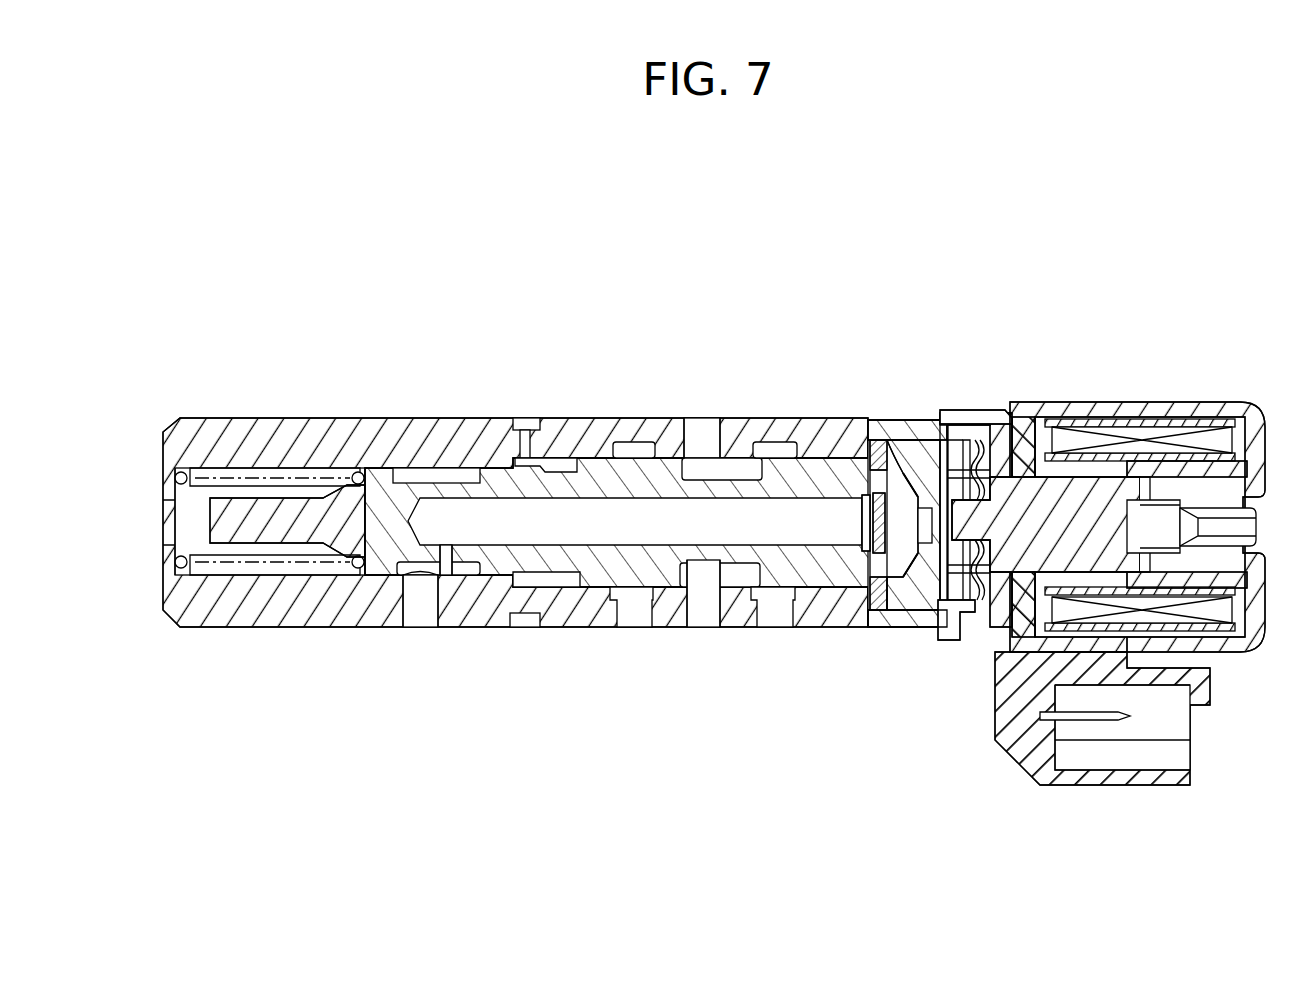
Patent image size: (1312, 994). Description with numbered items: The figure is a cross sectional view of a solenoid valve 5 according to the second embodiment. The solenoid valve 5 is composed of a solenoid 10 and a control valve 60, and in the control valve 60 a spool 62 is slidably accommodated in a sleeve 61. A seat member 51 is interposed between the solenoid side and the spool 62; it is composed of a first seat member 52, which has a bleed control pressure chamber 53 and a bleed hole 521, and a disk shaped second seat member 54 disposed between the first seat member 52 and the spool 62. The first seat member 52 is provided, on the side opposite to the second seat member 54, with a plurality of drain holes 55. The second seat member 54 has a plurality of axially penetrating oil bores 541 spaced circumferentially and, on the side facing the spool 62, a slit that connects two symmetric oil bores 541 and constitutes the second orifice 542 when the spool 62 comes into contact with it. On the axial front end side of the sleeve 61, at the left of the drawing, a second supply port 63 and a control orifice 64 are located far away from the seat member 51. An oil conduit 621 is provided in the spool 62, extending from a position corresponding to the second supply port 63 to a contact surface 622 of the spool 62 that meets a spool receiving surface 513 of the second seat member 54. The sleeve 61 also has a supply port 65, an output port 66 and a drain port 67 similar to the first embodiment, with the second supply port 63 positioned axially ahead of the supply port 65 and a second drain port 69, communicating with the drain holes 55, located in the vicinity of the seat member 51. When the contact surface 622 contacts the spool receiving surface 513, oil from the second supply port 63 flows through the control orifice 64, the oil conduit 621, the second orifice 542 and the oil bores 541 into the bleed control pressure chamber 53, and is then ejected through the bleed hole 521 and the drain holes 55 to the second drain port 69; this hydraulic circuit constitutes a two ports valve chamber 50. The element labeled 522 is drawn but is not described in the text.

The solenoid valve 5 is at (638, 307).
The solenoid 10 is at (1122, 382).
The two ports valve chamber 50 is at (617, 553).
The seat member 51 is at (840, 285).
The first seat member 52 is at (960, 412).
The bleed hole 521 is at (940, 595).
The housing cover plate 522 is at (1010, 410).
The bleed control pressure chamber 53 is at (916, 537).
The second seat member 54 is at (871, 440).
The oil bores 541 is at (920, 494).
The second orifice 542 is at (845, 497).
The drain holes 55 is at (940, 618).
The control valve 60 is at (665, 398).
The sleeve 61 is at (298, 445).
The spool 62 is at (592, 482).
The oil conduit 621 is at (668, 530).
The contact surface 622 is at (868, 602).
The second supply port 63 is at (405, 612).
The control orifice 64 is at (440, 553).
The supply port 65 is at (630, 617).
The output port 66 is at (700, 617).
The drain port 67 is at (765, 615).
The second drain port 69 is at (932, 622).
The spool receiving surface 513 is at (840, 625).